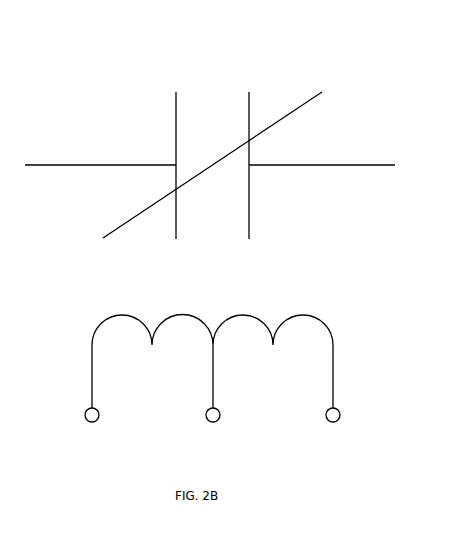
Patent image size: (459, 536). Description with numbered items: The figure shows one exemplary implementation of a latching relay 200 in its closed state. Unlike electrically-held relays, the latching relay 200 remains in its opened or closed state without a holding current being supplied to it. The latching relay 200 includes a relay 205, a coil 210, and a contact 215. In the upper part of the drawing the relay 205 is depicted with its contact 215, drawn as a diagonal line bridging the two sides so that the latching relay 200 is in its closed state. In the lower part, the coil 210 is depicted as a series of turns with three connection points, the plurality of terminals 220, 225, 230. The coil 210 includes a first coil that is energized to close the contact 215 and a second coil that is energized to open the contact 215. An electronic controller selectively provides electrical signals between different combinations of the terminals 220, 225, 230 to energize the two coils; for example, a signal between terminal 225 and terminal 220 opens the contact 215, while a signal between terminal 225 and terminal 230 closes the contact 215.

The latching relay 200 is at (120, 52).
The relay 205 is at (175, 125).
The coil 210 is at (91, 358).
The contact 215 is at (309, 97).
The terminal 220 is at (86, 409).
The terminal 225 is at (208, 409).
The terminal 230 is at (328, 409).